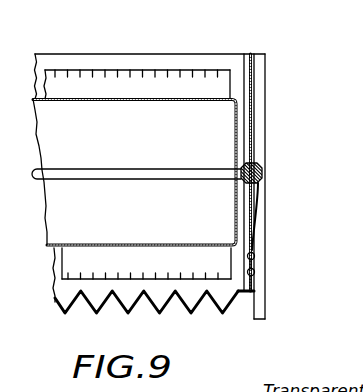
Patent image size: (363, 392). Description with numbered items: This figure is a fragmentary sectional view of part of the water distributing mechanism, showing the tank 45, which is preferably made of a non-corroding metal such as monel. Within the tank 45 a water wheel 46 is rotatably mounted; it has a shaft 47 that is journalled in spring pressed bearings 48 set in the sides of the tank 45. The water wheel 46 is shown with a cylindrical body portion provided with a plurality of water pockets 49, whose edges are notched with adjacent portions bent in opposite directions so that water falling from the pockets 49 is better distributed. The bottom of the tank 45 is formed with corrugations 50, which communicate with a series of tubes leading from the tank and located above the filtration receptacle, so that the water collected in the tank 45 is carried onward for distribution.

The perforated panel 49 is at (157, 82).
The guide rail 45 is at (253, 95).
The fastener edge of sliding panel 46 is at (237, 125).
The slide bar 47 is at (166, 153).
The clamp block 48 is at (263, 172).
The zigzag lower edge 50 is at (143, 317).